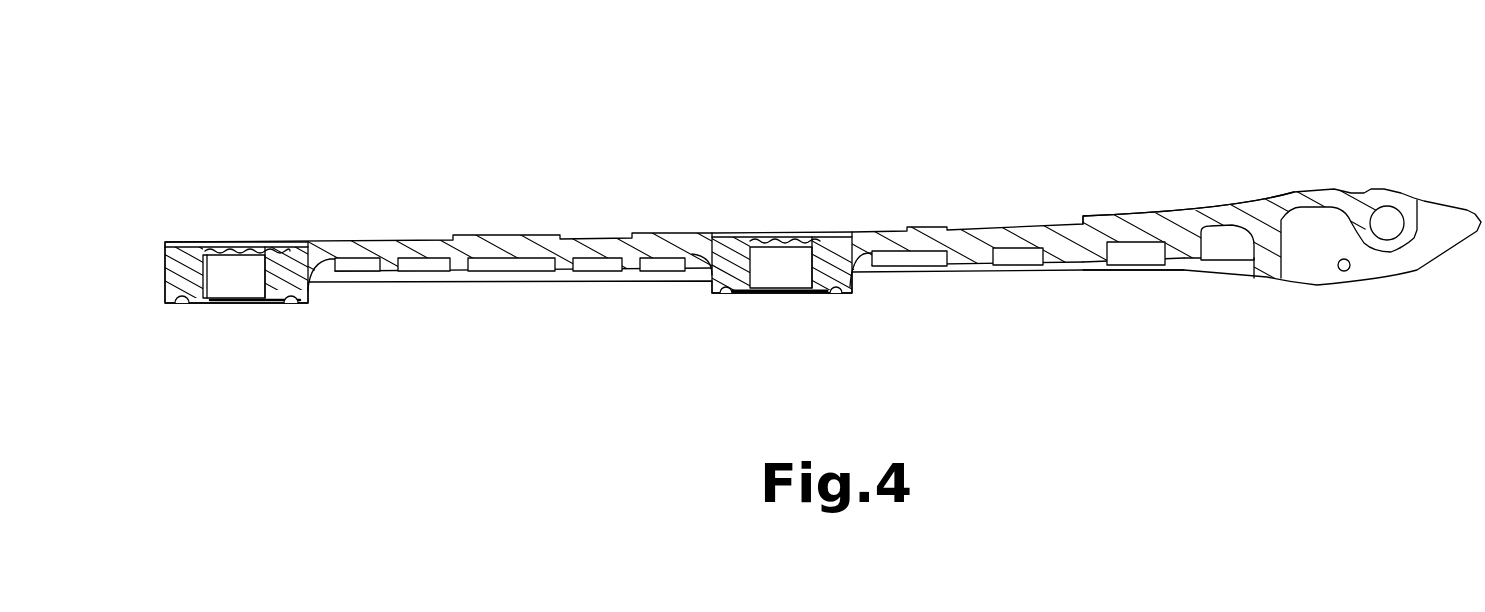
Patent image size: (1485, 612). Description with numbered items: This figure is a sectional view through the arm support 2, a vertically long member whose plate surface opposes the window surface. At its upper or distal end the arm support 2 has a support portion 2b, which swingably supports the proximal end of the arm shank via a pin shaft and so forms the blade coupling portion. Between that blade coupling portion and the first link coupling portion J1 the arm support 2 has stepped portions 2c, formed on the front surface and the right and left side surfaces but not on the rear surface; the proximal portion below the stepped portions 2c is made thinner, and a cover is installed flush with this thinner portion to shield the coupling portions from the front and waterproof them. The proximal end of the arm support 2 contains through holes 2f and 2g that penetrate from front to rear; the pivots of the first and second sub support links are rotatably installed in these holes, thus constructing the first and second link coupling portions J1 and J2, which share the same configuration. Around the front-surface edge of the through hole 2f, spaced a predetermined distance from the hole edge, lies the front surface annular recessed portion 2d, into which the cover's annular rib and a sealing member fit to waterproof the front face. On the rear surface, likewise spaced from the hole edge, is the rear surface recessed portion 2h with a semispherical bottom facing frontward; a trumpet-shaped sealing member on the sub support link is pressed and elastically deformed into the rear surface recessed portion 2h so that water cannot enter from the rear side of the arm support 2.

The arm support 2 is at (768, 113).
The support portion 2b is at (1397, 194).
The stepped portions 2c is at (1083, 222).
The front surface annular recessed portion 2d is at (287, 247).
The through hole 2f is at (262, 282).
The through hole 2g is at (805, 276).
The rear surface recessed portion 2h is at (290, 296).
The first link coupling portion J1 is at (236, 204).
The second link coupling portion J2 is at (774, 210).